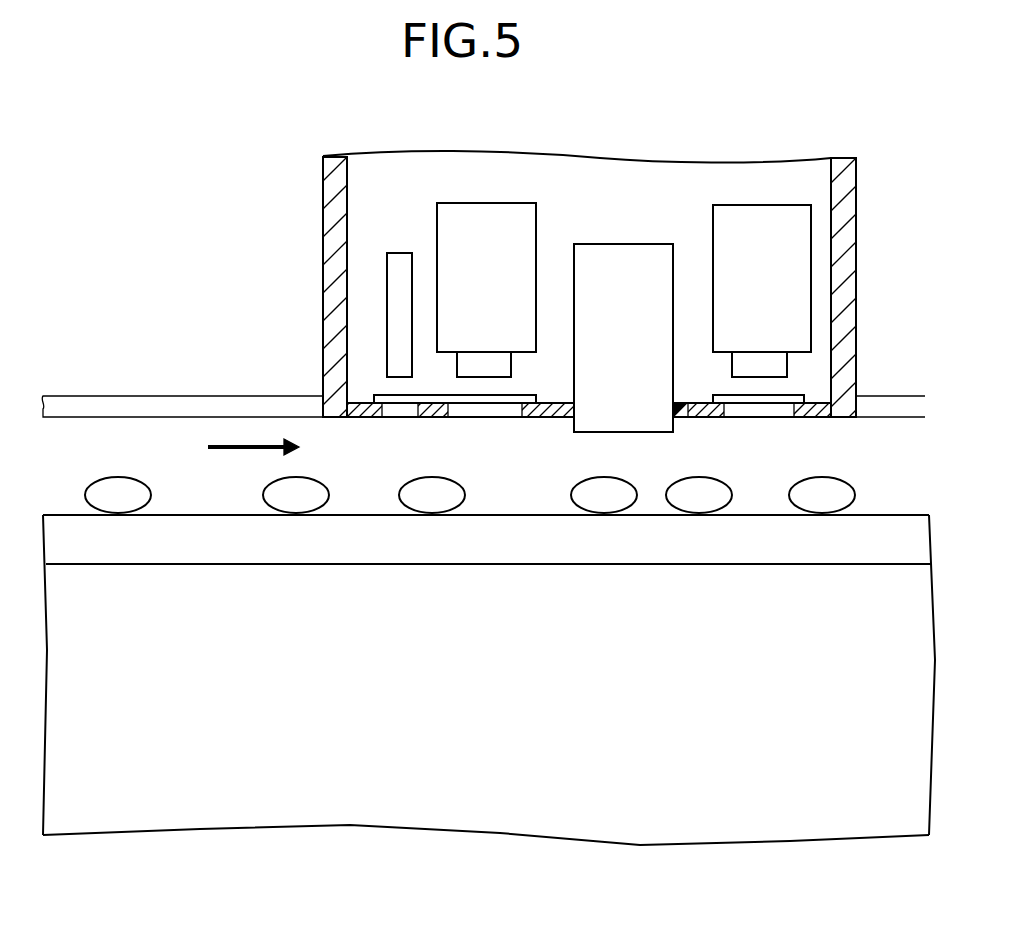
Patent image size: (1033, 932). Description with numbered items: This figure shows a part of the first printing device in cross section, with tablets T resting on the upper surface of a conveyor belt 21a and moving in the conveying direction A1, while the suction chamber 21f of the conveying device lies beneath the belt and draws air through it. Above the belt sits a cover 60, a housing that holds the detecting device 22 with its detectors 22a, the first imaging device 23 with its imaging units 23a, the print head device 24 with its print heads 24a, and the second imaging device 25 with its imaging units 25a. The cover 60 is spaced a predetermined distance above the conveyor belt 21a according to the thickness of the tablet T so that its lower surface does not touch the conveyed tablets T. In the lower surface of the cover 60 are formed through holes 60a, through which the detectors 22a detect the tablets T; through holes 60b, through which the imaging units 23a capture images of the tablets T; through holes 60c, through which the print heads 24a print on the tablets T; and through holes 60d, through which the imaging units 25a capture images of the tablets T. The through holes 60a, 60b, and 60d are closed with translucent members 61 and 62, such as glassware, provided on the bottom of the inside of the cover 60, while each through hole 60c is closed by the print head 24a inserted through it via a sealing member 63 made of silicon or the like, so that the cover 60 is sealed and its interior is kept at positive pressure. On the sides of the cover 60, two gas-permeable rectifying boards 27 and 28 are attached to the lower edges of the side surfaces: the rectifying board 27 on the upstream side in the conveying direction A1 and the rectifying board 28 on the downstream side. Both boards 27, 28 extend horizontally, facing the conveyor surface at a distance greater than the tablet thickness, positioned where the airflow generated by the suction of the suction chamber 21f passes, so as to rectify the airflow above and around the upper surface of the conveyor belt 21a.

The cover 60 is at (323, 283).
The through holes 60a is at (402, 408).
The through holes 60b is at (486, 408).
The through holes 60c is at (676, 420).
The through holes 60d is at (772, 410).
The translucent member 61 is at (528, 395).
The translucent member 62 is at (722, 395).
The sealing member 63 is at (688, 410).
The detecting device 22 is at (386, 241).
The detector 22a is at (398, 253).
The first imaging device 23 is at (472, 236).
The imaging unit 23a is at (490, 203).
The print head device 24 is at (610, 276).
The print head 24a is at (630, 244).
The second imaging device 25 is at (747, 239).
The imaging unit 25a is at (768, 205).
The rectifying board 27 is at (178, 396).
The rectifying board 28 is at (888, 396).
The conveyor belt 21a is at (886, 525).
The suction chamber 21f is at (840, 838).
The tablet T is at (118, 477).
The conveying direction A1 is at (225, 448).